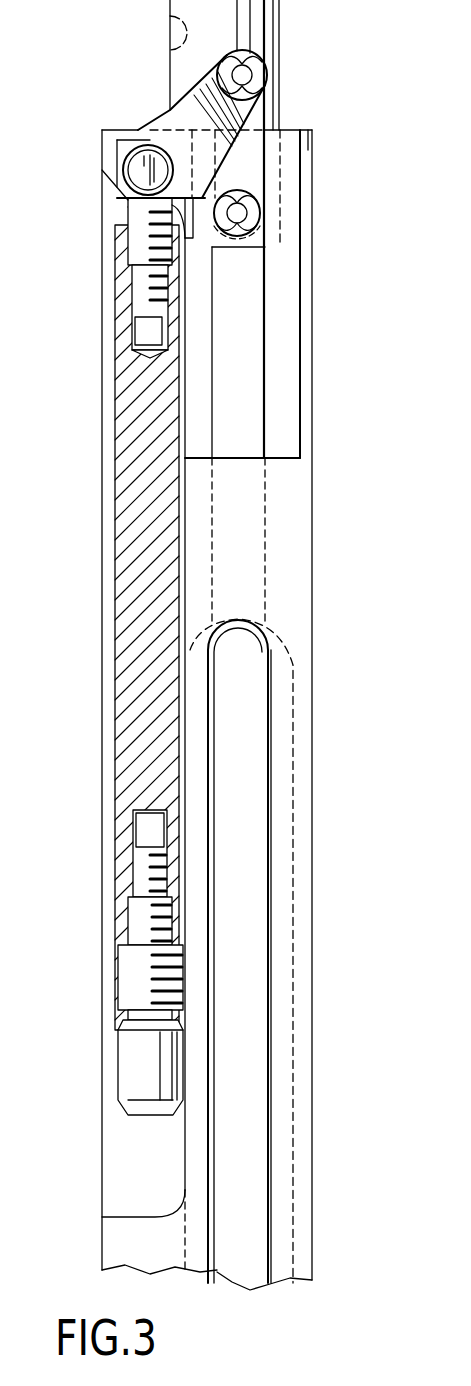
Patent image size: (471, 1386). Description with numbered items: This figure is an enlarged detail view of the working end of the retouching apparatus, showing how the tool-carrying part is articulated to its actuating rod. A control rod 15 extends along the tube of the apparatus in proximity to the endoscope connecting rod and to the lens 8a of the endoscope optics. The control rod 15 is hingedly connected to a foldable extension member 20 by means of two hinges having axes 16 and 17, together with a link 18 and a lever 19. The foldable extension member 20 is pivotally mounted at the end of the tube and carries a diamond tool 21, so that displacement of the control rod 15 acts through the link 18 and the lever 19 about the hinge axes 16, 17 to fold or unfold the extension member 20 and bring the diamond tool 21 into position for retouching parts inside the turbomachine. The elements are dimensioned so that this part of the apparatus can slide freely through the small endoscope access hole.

The lens 8a is at (140, 47).
The control rod 15 is at (274, 294).
The hinge axis 16 is at (284, 218).
The hinge axis 17 is at (278, 64).
The link 18 is at (243, 126).
The lever 19 is at (121, 139).
The foldable extension member 20 is at (114, 627).
The diamond tool 21 is at (150, 997).